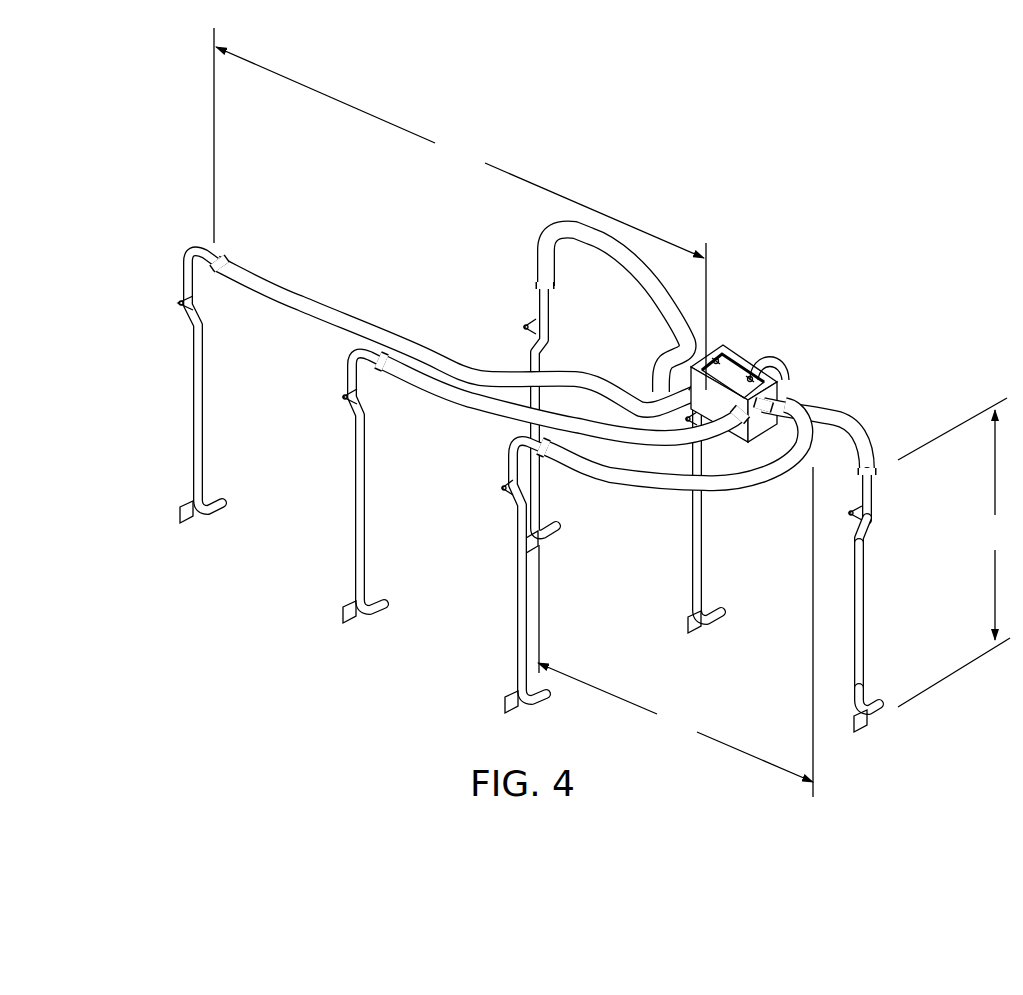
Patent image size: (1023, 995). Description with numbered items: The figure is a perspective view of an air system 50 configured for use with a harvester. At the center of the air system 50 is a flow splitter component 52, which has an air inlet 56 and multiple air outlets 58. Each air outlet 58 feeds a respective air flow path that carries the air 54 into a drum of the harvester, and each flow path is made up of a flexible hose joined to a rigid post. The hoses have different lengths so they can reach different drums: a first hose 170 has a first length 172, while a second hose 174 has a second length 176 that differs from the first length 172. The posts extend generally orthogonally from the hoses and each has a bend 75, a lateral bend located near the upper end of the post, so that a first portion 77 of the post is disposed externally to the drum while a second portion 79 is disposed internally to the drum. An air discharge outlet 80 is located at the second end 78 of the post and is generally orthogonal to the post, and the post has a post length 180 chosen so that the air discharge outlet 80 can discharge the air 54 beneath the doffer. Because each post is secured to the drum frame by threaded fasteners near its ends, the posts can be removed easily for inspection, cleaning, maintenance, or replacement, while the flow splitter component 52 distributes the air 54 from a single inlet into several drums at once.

The air system 50 is at (552, 486).
The flow splitter component 52 is at (714, 352).
The air 54 is at (779, 382).
The air inlet 56 is at (790, 366).
The air outlets 58 is at (775, 412).
The bend 75 is at (872, 540).
The first portion 77 is at (877, 503).
The second end 78 is at (865, 687).
The second portion 79 is at (866, 583).
The air discharge outlet 80 is at (878, 722).
The first hose 170 is at (730, 470).
The first length 172 is at (675, 632).
The second hose 174 is at (297, 297).
The second length 176 is at (460, 209).
The post length 180 is at (957, 552).